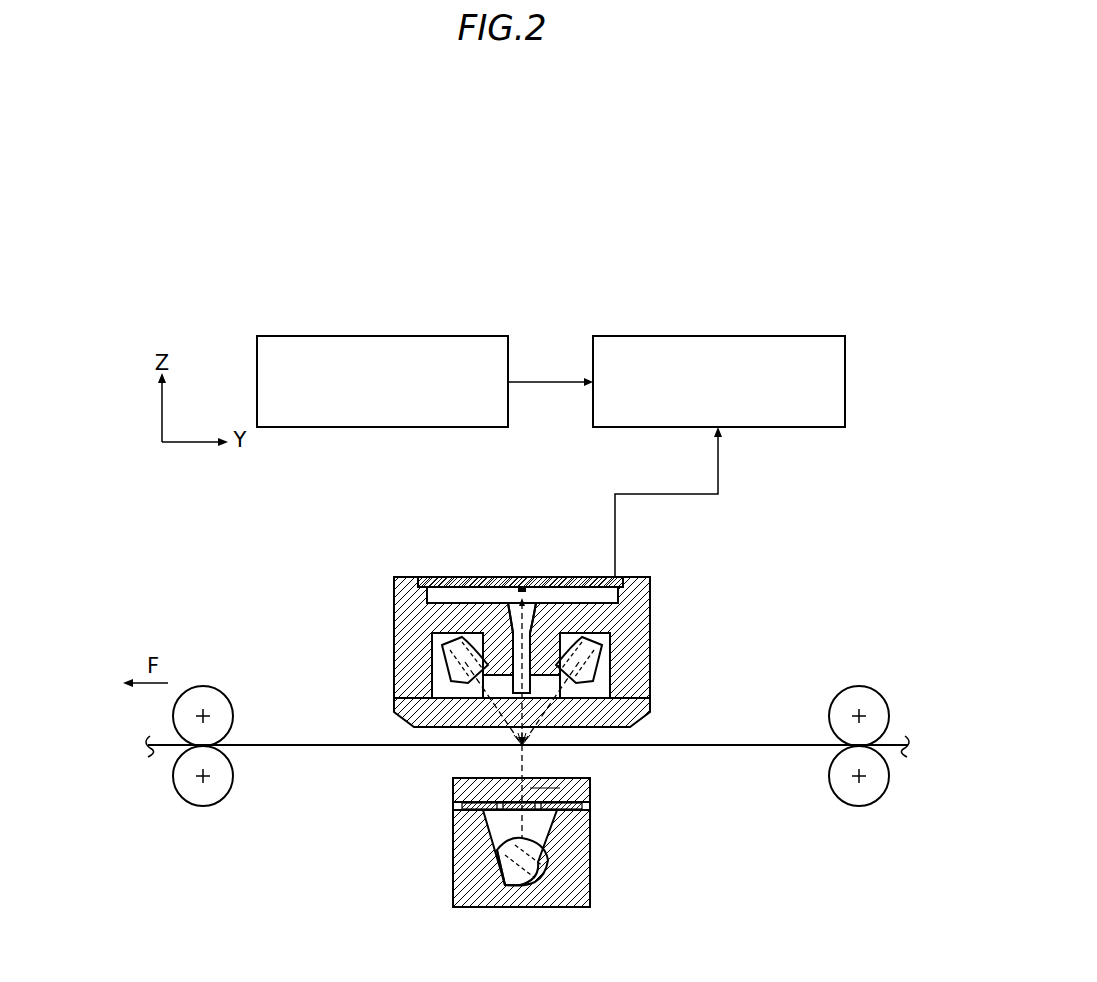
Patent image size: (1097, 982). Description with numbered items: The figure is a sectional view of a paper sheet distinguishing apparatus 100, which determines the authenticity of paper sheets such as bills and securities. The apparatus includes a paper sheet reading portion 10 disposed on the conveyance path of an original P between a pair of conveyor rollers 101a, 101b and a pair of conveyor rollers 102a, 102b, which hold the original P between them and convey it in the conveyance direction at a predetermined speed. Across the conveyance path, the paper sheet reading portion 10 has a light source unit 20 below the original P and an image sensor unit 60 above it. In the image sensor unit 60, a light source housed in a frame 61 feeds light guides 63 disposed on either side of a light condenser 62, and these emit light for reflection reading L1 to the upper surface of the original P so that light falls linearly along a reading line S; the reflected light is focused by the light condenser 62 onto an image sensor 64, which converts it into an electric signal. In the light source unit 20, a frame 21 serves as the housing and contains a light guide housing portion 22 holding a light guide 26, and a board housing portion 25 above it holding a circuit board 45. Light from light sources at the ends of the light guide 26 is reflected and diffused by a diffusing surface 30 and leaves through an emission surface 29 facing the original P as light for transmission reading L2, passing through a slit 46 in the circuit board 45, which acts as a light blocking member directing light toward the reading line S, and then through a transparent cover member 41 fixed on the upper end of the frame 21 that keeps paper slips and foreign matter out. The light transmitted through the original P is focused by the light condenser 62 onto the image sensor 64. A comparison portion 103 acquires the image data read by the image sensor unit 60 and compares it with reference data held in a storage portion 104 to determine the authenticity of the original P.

The paper sheet distinguishing apparatus 100 is at (447, 209).
The storage portion 104 is at (397, 336).
The comparison portion 103 is at (718, 336).
The paper sheet reading portion 10 is at (757, 514).
The image sensor unit 60 is at (530, 650).
The frame 61 is at (394, 607).
The light condenser 62 is at (545, 637).
The light guides 63 is at (432, 660).
The image sensor 64 is at (518, 590).
The light for reflection reading L1 is at (432, 690).
The light for transmission reading L2 is at (520, 765).
The reading line S is at (525, 748).
The original P is at (731, 745).
The conveyor roller 101a is at (203, 686).
The conveyor roller 101b is at (203, 806).
The conveyor roller 102a is at (860, 686).
The conveyor roller 102b is at (859, 806).
The light source unit 20 is at (540, 780).
The frame 21 is at (448, 859).
The light guide housing portion 22 is at (532, 862).
The board housing portion 25 is at (460, 805).
The light guide 26 is at (495, 877).
The emission surface 29 is at (547, 838).
The diffusing surface 30 is at (525, 907).
The cover member 41 is at (477, 787).
The circuit board 45 is at (590, 808).
The slit 46 is at (538, 795).